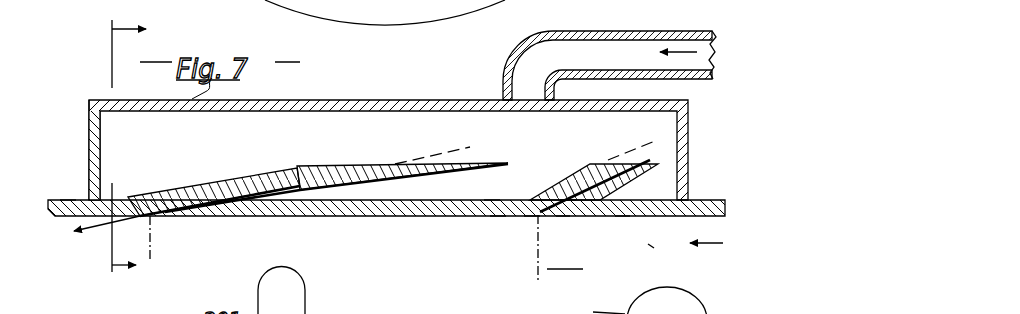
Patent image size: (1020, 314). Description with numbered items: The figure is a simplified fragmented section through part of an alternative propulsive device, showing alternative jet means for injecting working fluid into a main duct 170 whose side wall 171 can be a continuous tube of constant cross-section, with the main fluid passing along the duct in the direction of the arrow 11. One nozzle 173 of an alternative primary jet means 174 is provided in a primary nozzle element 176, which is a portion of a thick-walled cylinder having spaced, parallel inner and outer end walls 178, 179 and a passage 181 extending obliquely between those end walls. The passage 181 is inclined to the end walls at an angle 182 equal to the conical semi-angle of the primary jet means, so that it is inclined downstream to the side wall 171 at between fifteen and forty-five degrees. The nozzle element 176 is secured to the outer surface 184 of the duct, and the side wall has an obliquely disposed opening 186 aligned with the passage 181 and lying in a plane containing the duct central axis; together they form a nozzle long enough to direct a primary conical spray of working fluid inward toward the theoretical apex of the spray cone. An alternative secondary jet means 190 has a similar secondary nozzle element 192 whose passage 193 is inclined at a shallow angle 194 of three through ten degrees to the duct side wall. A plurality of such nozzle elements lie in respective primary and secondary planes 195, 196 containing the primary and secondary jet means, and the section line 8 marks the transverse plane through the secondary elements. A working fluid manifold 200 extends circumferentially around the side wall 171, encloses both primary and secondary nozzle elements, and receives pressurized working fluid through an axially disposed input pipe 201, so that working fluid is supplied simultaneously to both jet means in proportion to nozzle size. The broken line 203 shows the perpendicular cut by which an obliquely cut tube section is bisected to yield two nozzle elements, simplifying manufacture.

The section line 8- 8 is at (113, 146).
The arrow 11 is at (723, 241).
The duct 170 is at (566, 259).
The side wall 171 is at (361, 217).
The nozzle 173 is at (563, 216).
The primary jet means 174 is at (529, 221).
The primary nozzle element 176 is at (562, 177).
The inner end wall 178 is at (622, 216).
The outer end wall 179 is at (645, 159).
The passage 181 is at (618, 160).
The angle 182 is at (495, 219).
The outer surface 184 is at (492, 203).
The opening 186 is at (566, 194).
The secondary jet means 190 is at (145, 219).
The secondary nozzle element 192 is at (266, 150).
The passage 193 is at (365, 152).
The angle 194 is at (70, 186).
The primary plane 195 is at (537, 265).
The secondary plane 196 is at (150, 263).
The working fluid manifold 200 is at (463, 97).
The input pipe 201 is at (621, 31).
The broken line 203 is at (650, 247).